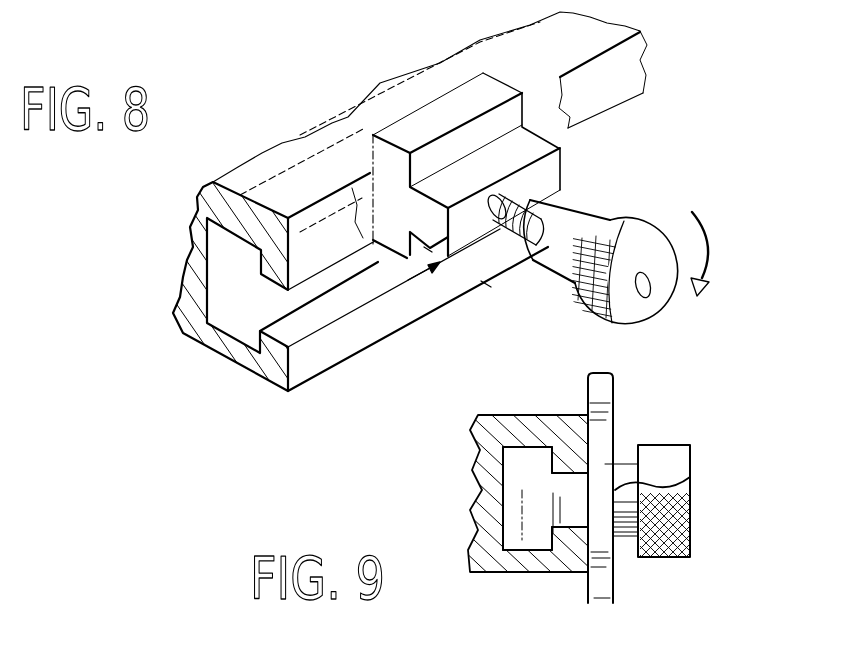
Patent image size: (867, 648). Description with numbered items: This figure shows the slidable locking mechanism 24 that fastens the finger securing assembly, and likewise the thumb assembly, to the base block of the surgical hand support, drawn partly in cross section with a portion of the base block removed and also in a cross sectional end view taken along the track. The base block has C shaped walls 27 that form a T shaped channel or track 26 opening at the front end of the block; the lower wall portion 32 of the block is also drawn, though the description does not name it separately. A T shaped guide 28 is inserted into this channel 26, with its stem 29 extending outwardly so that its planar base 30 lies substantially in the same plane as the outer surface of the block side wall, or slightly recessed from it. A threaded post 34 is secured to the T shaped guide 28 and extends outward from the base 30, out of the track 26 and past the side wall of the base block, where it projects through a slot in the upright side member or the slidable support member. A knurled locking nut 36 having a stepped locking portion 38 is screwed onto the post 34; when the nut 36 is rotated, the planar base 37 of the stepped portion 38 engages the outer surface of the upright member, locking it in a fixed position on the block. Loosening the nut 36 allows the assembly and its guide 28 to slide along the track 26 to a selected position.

In FIG. 8, the slidable locking mechanism 24 is at (658, 161).
In FIG. 8, the T shaped channel or track 26 is at (213, 295).
In FIG. 8, the C shaped walls 27 is at (267, 220).
In FIG. 8, the T shaped guide 28 is at (395, 243).
In FIG. 9, the T shaped guide 28 is at (523, 487).
In FIG. 8, the stem 29 is at (390, 193).
In FIG. 8, the planar base 30 is at (469, 233).
In FIG. 8, the bottom rail 32 is at (322, 365).
In FIG. 8, the threaded post 34 is at (515, 224).
In FIG. 8, the knurled locking nut 36 is at (657, 295).
In FIG. 9, the knurled locking nut 36 is at (690, 531).
In FIG. 9, the planar base of the stepped portion 37 is at (690, 477).
In FIG. 8, the stepped locking portion 38 is at (590, 210).
In FIG. 9, the stepped locking portion 38 is at (618, 537).